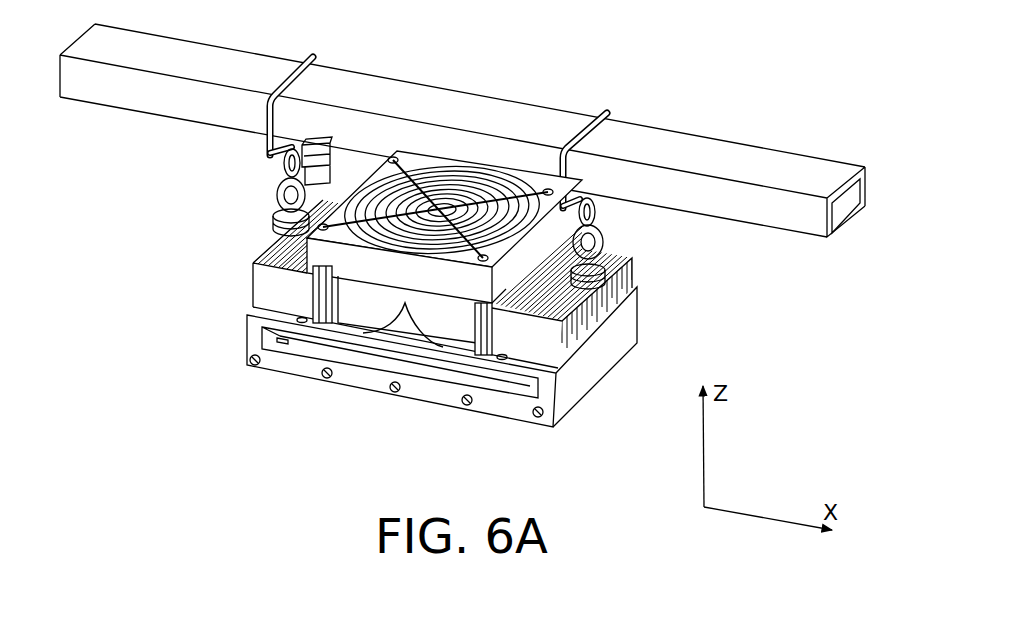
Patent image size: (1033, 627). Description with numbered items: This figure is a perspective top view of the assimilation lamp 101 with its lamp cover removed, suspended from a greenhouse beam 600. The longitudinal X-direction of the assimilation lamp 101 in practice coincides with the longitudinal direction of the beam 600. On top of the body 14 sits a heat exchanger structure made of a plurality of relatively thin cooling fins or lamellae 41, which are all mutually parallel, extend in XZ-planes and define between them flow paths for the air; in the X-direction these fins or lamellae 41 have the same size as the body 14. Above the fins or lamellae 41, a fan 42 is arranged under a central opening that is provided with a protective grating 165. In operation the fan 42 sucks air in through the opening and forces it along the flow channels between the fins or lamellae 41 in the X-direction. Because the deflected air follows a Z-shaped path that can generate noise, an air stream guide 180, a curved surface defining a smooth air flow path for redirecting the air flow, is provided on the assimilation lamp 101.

The greenhouse beam 600 is at (693, 147).
The protective grating 165 is at (424, 196).
The fan 42 is at (513, 196).
The cooling fins or lamellae 41 is at (627, 277).
The air stream guide 180 is at (413, 327).
The body 14 is at (598, 353).
The assimilation lamp 101 is at (202, 395).